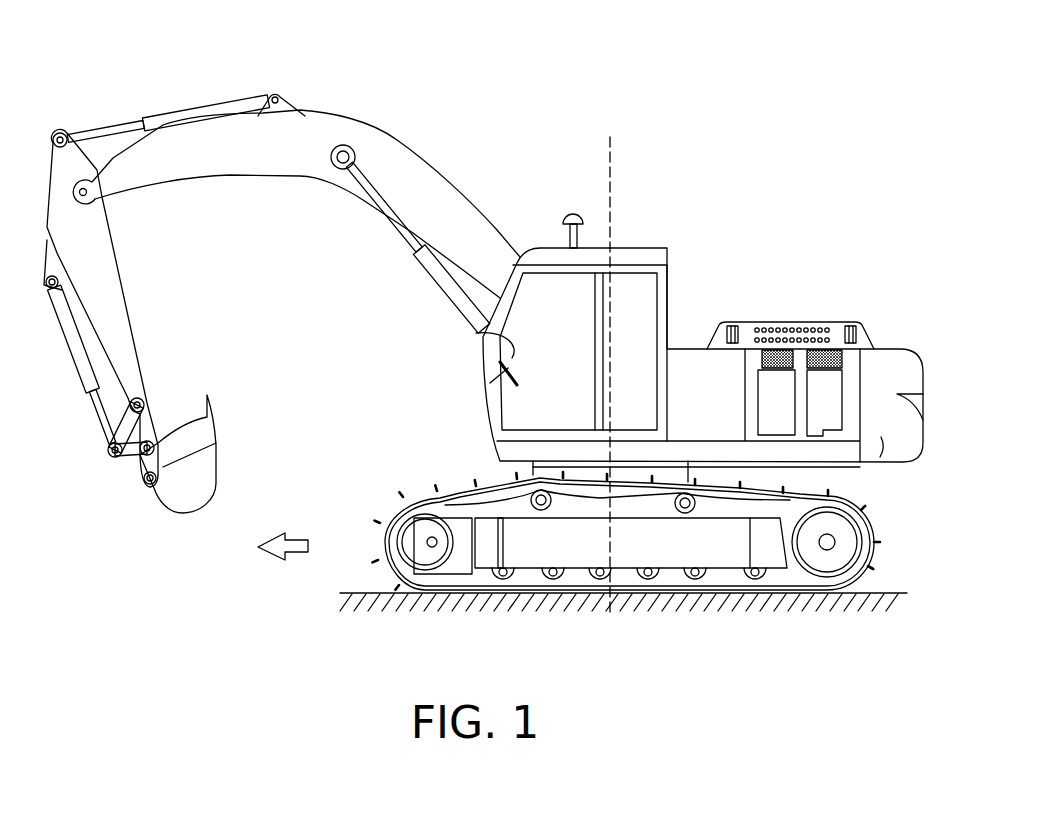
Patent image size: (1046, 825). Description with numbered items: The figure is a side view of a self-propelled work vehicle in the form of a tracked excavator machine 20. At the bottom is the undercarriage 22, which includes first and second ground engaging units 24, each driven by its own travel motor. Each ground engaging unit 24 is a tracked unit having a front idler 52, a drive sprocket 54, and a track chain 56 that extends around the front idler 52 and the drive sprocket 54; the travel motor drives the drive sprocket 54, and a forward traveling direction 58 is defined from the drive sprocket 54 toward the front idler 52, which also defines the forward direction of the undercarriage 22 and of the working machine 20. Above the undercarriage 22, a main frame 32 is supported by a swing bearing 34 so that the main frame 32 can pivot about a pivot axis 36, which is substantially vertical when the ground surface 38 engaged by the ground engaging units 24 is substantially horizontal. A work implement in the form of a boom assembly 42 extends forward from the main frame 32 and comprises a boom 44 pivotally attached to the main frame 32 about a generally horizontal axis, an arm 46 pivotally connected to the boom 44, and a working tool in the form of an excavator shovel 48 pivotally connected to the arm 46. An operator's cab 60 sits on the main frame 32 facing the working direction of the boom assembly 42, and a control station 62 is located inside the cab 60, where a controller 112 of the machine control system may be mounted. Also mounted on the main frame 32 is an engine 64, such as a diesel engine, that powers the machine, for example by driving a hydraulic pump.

The tracked excavator machine 20 is at (184, 48).
The undercarriage 22 is at (661, 557).
The ground engaging units 24 is at (886, 547).
The main frame 32 is at (840, 453).
The swing bearing 34 is at (533, 473).
The pivot axis 36 is at (613, 153).
The ground surface 38 is at (890, 592).
The boom assembly 42 is at (441, 134).
The boom 44 is at (337, 178).
The arm 46 is at (106, 282).
The excavator shovel 48 is at (190, 505).
The front idler 52 is at (410, 535).
The drive sprocket 54 is at (797, 573).
The track chain 56 is at (525, 589).
The forward traveling direction 58 is at (292, 540).
The operator's cab 60 is at (639, 257).
The control station 62 is at (417, 273).
The engine 64 is at (864, 330).
The controller 112 is at (502, 338).